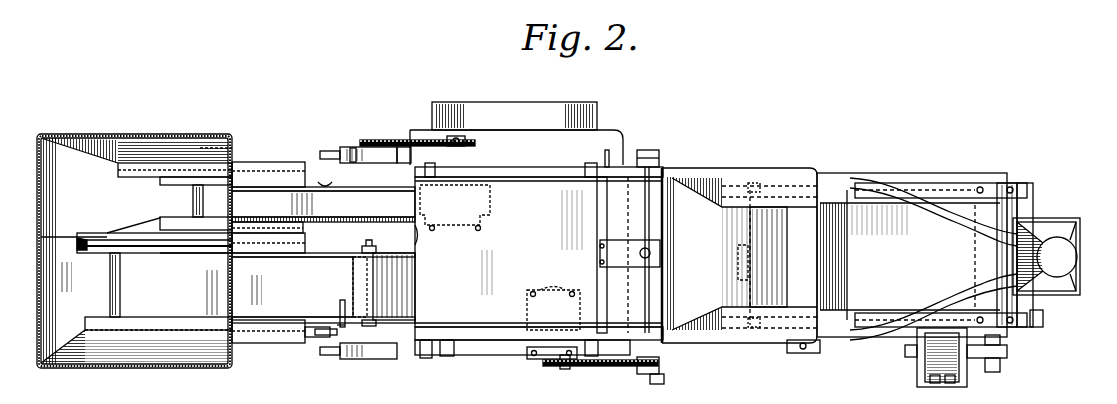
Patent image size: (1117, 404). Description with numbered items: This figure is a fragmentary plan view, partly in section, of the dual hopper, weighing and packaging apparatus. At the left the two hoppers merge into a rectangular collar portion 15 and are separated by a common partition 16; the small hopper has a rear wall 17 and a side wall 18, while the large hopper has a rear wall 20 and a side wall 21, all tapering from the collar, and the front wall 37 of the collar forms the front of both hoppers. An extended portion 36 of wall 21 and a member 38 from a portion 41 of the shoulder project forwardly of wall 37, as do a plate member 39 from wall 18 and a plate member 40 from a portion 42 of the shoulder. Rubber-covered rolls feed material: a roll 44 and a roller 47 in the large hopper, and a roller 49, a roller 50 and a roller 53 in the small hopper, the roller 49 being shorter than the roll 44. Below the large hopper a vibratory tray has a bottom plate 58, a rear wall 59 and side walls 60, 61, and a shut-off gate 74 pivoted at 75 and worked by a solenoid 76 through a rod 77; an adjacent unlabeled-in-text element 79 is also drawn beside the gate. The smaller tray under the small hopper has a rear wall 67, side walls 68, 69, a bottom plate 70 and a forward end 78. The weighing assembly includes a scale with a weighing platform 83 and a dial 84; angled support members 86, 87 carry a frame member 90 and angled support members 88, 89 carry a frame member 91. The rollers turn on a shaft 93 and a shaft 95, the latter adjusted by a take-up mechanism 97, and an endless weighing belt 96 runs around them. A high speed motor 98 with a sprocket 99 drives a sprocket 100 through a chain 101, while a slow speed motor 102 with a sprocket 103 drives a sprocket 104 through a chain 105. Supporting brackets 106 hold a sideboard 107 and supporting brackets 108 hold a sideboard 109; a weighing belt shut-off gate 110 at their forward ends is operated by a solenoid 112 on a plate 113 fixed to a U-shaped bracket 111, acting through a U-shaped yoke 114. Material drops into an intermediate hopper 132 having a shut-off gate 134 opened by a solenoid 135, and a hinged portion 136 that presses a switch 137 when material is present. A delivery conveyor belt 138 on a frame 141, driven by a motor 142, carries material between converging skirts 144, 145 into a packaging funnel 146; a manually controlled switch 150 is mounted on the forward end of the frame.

The collar portion 15 is at (138, 370).
The common wall or partition 16 is at (196, 256).
The rear wall of small hopper 17 is at (86, 198).
The side wall of small hopper 18 is at (166, 152).
The rear wall of large hopper 20 is at (78, 297).
The side wall of large hopper 21 is at (146, 352).
The extended portion 36 is at (282, 343).
The front wall 37 is at (226, 282).
The member 38 is at (305, 238).
The plate member 39 is at (290, 163).
The plate member 40 is at (304, 226).
The portion of shoulder 41 is at (84, 250).
The portion of shoulder 42 is at (142, 225).
The roll 44 is at (172, 318).
The roller 47 is at (178, 254).
The roller 49 is at (166, 181).
The roller 50 is at (174, 216).
The roller 53 is at (204, 150).
The bottom plate 58 is at (286, 284).
The rear wall of tray 59 is at (120, 290).
The side wall of tray 60 is at (320, 320).
The side wall of tray 61 is at (328, 257).
The rear wall of tray 67 is at (203, 203).
The side wall of tray 68 is at (330, 184).
The side wall of tray 69 is at (308, 215).
The bottom plate 70 is at (280, 203).
The shut-off gate 74 is at (415, 282).
The pivot 75 is at (370, 244).
The solenoid 76 is at (325, 337).
The rod 77 is at (342, 300).
The forward end of tray 78 is at (413, 236).
The slide block 79 is at (370, 282).
The weighing platform 83 is at (506, 356).
The dial 84 is at (580, 104).
The angled support member 86 is at (424, 358).
The angled support member 87 is at (592, 357).
The angled support member 88 is at (406, 140).
The angled support member 89 is at (610, 152).
The frame member 90 is at (488, 341).
The frame member 91 is at (515, 166).
The shaft 93 is at (656, 152).
The shaft 95 is at (370, 146).
The weighing belt 96 is at (516, 258).
The take-up mechanism 97 is at (345, 148).
The high speed motor 98 is at (492, 210).
The sprocket 99 is at (460, 134).
The sprocket 100 is at (356, 146).
The chain 101 is at (398, 146).
The slow speed motor 102 is at (522, 316).
The sprocket 103 is at (548, 360).
The sprocket 104 is at (664, 377).
The chain 105 is at (622, 367).
The supporting brackets 106 is at (448, 357).
The sideboard 107 is at (472, 326).
The supporting brackets 108 is at (432, 177).
The sideboard 109 is at (526, 188).
The weighing belt shut-off gate 110 is at (684, 258).
The U-shaped bracket 111 is at (597, 229).
The solenoid 112 is at (640, 268).
The plate 113 is at (620, 242).
The U-shaped yoke 114 is at (644, 303).
The intermediate hopper 132 is at (716, 168).
The shut-off gate 134 is at (852, 296).
The solenoid 135 is at (803, 354).
The hinged portion 136 is at (760, 238).
The electrical switch 137 is at (740, 271).
The delivery conveyor belt 138 is at (968, 186).
The frame 141 is at (935, 183).
The motor 142 is at (918, 372).
The skirt or side board 144 is at (882, 336).
The skirt or side board 145 is at (866, 182).
The packaging funnel 146 is at (1082, 226).
The electrical switch 150 is at (1036, 328).